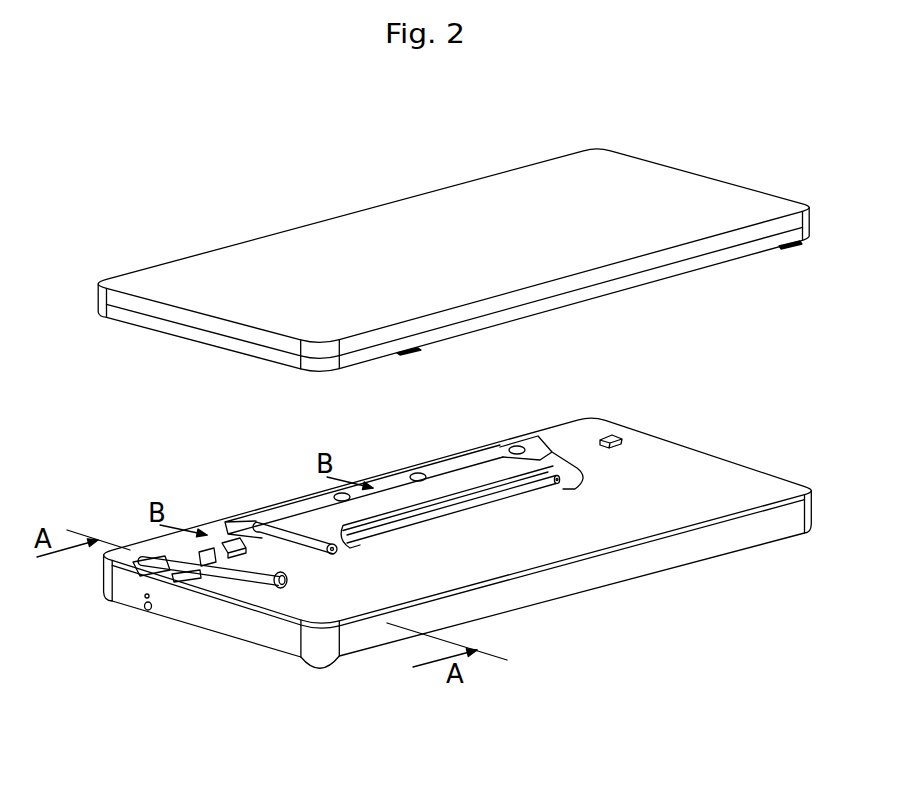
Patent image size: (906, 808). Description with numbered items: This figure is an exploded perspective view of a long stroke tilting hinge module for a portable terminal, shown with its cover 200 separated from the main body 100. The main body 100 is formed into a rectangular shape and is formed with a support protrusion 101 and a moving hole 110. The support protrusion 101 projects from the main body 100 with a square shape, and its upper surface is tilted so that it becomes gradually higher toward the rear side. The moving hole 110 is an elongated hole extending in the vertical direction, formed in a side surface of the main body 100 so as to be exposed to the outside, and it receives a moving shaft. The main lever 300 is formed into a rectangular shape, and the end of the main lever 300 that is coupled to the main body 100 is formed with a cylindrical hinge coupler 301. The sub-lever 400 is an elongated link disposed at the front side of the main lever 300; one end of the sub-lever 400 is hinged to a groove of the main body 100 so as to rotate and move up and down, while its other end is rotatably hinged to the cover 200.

The main body 100 is at (613, 525).
The support protrusion 101 is at (607, 436).
The moving hole 110 is at (143, 596).
The cover 200 is at (613, 187).
The main lever 300 is at (473, 485).
The hinge coupler 301 is at (253, 530).
The sub-lever 400 is at (258, 582).